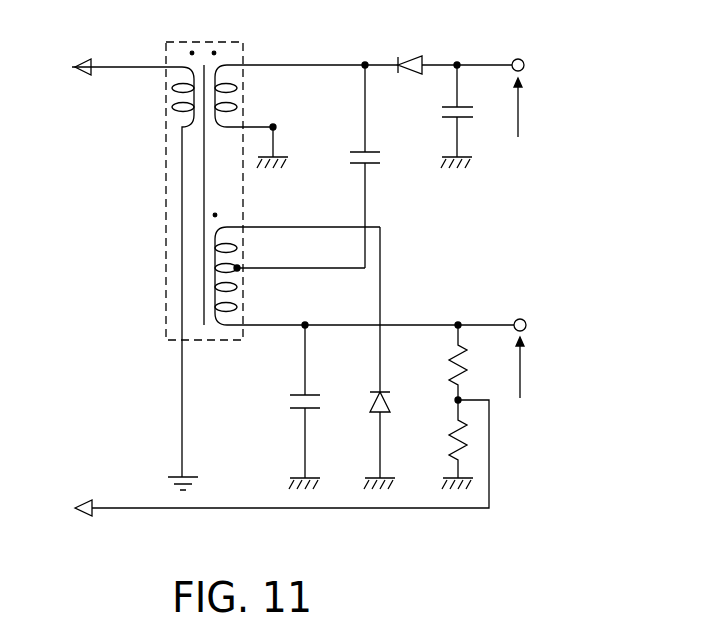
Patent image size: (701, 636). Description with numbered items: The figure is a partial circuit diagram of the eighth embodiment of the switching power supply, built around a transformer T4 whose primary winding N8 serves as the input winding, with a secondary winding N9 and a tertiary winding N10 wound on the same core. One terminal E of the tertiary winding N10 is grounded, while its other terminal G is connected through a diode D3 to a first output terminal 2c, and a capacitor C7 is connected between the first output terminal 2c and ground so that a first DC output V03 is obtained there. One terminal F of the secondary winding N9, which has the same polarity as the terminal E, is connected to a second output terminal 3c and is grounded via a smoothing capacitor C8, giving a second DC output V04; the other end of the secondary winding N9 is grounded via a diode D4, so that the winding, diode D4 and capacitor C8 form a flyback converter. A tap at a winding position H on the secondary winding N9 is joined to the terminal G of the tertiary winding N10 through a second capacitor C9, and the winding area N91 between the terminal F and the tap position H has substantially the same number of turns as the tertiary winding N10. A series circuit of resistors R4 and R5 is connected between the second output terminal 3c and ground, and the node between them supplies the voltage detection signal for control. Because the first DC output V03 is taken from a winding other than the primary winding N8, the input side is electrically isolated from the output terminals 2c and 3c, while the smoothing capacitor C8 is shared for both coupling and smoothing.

The transformer T4 is at (163, 328).
The primary winding N8 is at (133, 268).
The tertiary winding N10 is at (290, 116).
The secondary winding N9 is at (297, 259).
The winding area N91 is at (277, 299).
The diode D3 is at (453, 46).
The diode D4 is at (367, 358).
The capacitor C7 is at (442, 116).
The smoothing capacitor C8 is at (317, 407).
The second capacitor C9 is at (379, 166).
The resistor R4 is at (438, 362).
The resistor R5 is at (441, 444).
The first output terminal 2c is at (523, 59).
The second output terminal 3c is at (525, 319).
The other terminal of the tertiary winding G is at (363, 62).
The one terminal of the tertiary winding E is at (286, 129).
The winding position H is at (239, 267).
The one terminal of the secondary winding F is at (302, 331).
The first DC output V03 is at (542, 118).
The second DC output V04 is at (544, 380).